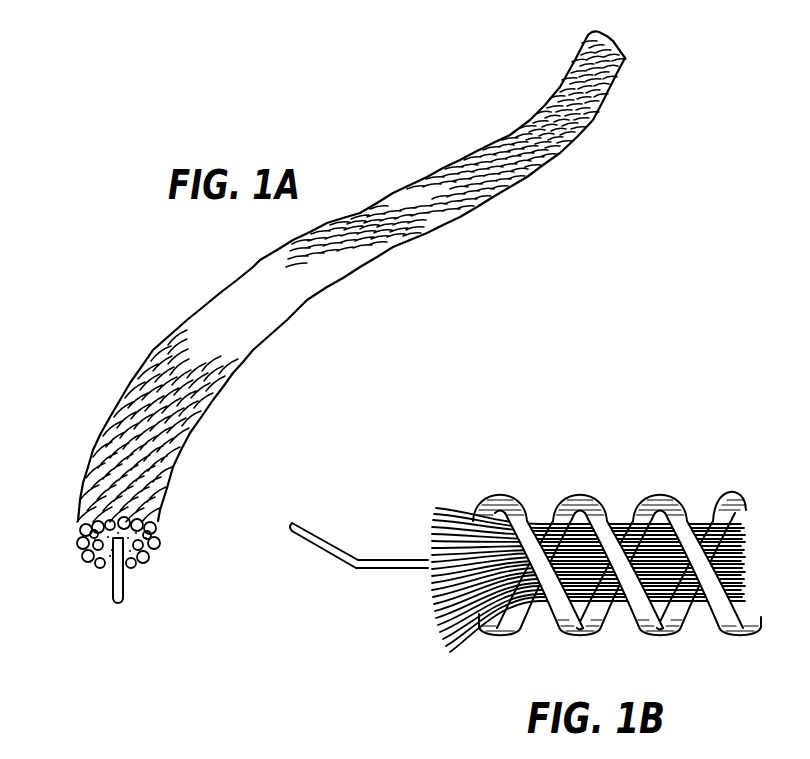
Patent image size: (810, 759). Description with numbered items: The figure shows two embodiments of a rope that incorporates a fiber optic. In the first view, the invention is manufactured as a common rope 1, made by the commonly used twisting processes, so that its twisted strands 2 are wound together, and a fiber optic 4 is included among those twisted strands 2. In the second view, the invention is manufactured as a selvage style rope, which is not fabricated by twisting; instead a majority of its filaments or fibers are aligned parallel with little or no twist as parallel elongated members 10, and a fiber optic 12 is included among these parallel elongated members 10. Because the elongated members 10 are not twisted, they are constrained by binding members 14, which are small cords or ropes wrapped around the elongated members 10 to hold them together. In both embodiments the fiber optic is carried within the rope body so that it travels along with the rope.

In FIG. 1A, the common rope 1 is at (96, 441).
In FIG. 1A, the twisted strands 2 is at (72, 544).
In FIG. 1A, the fiber optic 4 is at (127, 596).
In FIG. 1B, the parallel elongated members 10 is at (441, 512).
In FIG. 1B, the fiber optic 12 is at (324, 545).
In FIG. 1B, the binding members 14 is at (532, 626).